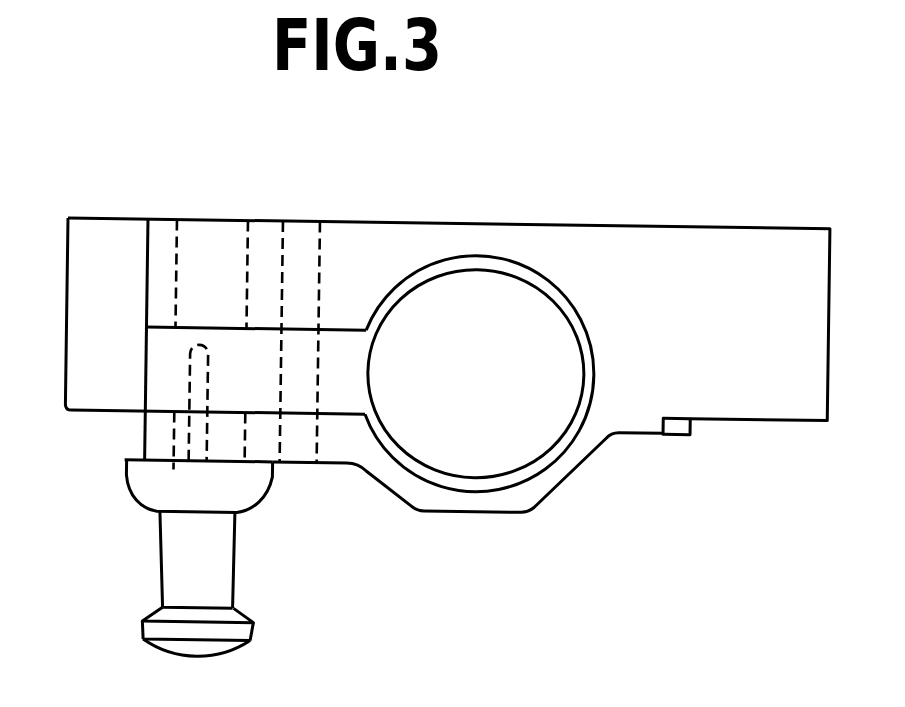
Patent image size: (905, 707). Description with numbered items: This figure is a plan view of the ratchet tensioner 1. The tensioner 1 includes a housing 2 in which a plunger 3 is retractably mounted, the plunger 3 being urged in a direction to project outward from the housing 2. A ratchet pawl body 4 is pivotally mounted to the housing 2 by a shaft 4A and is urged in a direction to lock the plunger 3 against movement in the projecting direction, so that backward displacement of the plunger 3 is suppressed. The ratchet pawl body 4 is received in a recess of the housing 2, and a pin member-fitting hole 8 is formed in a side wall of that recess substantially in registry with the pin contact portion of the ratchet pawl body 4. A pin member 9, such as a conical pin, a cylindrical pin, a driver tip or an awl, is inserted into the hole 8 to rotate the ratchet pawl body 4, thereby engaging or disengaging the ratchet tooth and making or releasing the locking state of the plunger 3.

The tensioner 1 is at (636, 207).
The housing 2 is at (771, 252).
The plunger 3 is at (482, 298).
The ratchet pawl body 4 is at (227, 350).
The shaft 4A is at (323, 256).
The pin member-fitting hole 8 is at (170, 437).
The pin member 9 is at (177, 566).